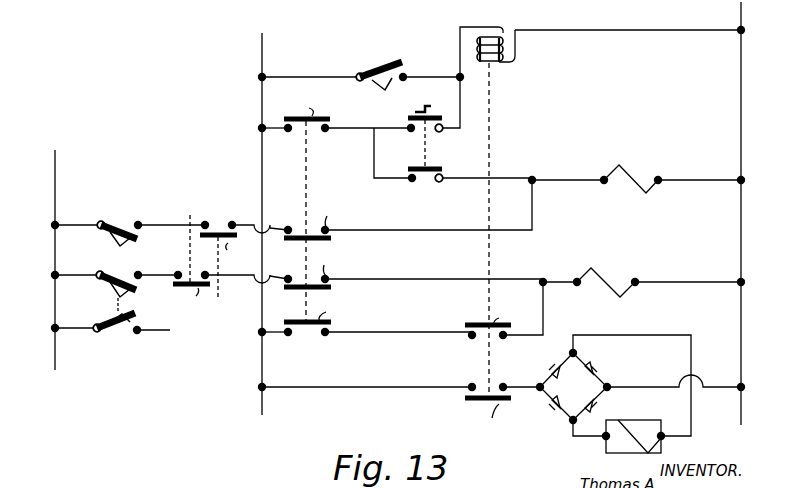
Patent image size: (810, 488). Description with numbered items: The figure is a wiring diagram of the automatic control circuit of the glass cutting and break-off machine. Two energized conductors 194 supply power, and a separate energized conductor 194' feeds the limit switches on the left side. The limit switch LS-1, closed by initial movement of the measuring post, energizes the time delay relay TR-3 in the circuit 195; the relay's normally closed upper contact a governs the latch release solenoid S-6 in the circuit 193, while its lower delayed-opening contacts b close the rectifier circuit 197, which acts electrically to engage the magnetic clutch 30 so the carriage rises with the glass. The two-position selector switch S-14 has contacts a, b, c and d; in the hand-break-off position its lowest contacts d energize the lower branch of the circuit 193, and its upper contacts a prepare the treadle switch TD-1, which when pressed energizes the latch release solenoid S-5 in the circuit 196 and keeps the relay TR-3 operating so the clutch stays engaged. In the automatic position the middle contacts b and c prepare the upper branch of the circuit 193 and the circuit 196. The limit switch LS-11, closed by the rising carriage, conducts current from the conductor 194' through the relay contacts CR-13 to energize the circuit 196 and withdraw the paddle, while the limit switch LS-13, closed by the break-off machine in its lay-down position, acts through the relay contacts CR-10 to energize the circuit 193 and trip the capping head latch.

The energized conductors 194 is at (503, 213).
The energized conductor 194' is at (83, 258).
The circuit 195 is at (676, 30).
The circuit 196 is at (553, 177).
The circuit 193 is at (514, 280).
The rectifier circuit 197 is at (538, 387).
The magnetic clutch 30 is at (607, 446).
The limit switch LS-1 is at (382, 68).
The time delay relay TR-3 is at (490, 115).
The treadle switch TD-1 is at (426, 150).
The two-position selector switch S-14 is at (307, 166).
The latch release solenoid S-5 is at (632, 170).
The latch release solenoid S-6 is at (606, 277).
The limit switch LS-11 is at (118, 221).
The limit switch LS-13 is at (116, 304).
The relay contacts CR-10 is at (190, 216).
The relay contacts CR-13 is at (218, 300).